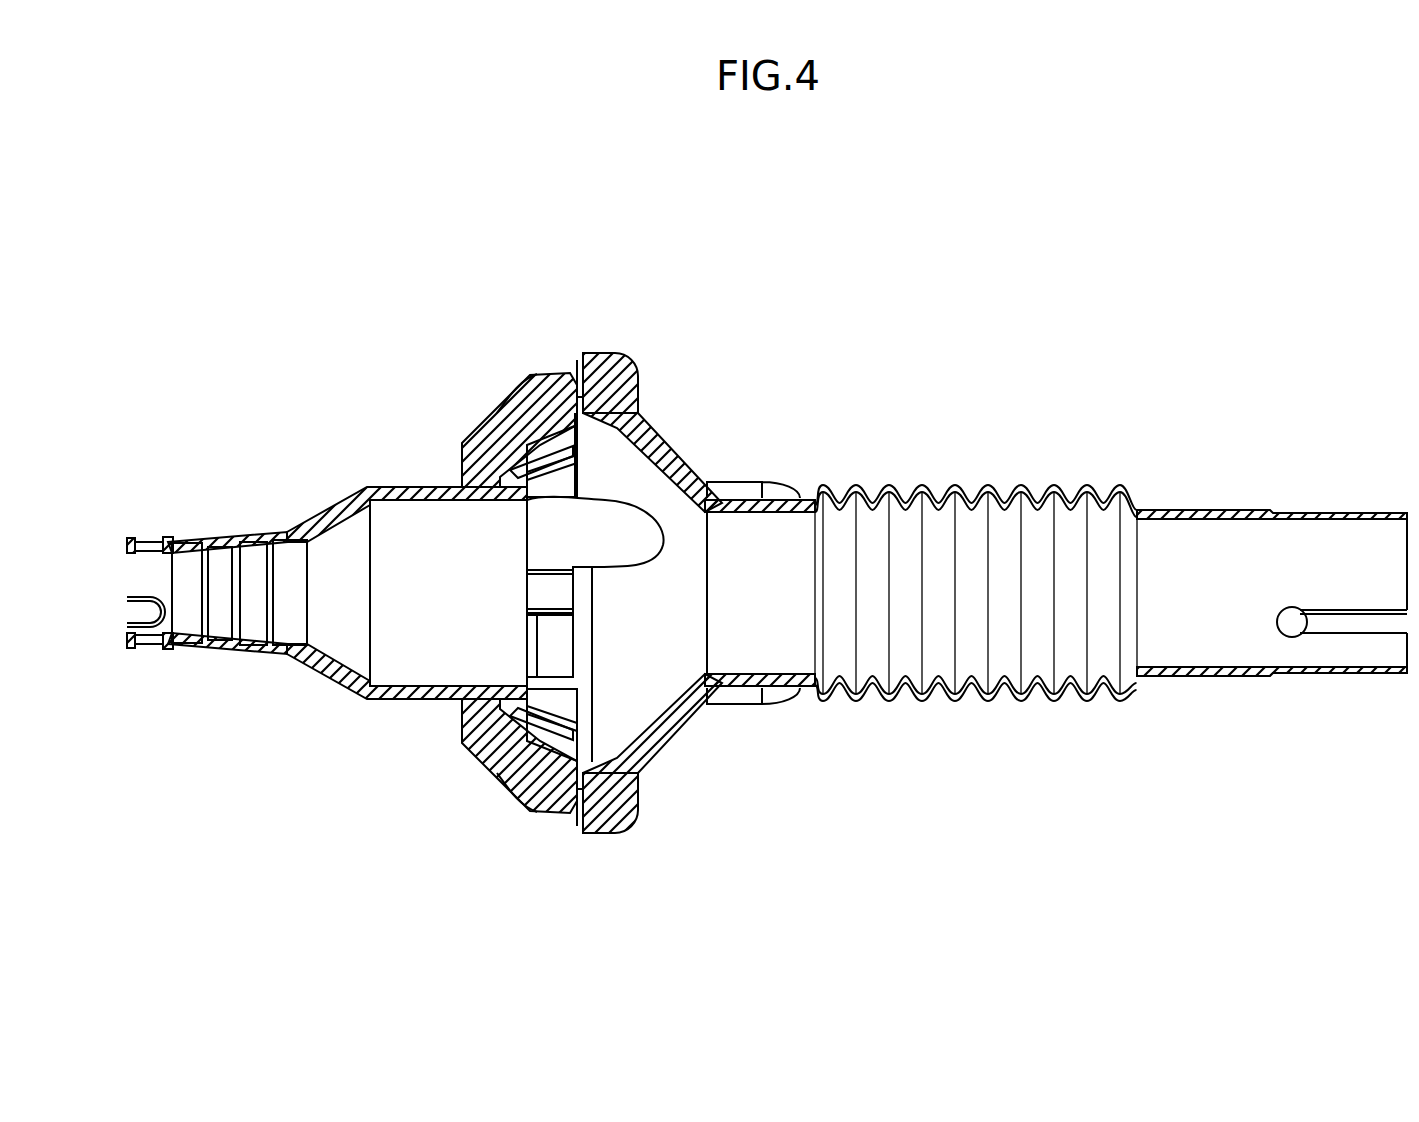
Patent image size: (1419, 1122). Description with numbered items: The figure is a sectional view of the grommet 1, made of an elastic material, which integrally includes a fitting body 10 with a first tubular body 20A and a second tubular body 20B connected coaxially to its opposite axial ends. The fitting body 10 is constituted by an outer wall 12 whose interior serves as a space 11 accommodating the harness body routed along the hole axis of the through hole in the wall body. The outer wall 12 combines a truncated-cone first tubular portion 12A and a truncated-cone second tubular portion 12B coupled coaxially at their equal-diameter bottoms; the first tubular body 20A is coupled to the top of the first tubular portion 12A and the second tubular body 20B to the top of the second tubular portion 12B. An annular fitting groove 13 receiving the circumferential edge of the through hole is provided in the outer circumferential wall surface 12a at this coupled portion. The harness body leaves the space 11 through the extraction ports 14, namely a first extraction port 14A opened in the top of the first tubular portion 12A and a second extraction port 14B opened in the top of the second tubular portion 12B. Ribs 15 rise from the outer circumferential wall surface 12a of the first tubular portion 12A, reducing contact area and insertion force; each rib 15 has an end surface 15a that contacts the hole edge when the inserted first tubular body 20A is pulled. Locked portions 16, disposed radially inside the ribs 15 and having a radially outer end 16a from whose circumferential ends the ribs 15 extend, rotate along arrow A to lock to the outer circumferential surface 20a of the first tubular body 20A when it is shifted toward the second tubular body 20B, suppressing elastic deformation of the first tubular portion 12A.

The grommet 1 is at (748, 168).
The fitting body 10 is at (480, 216).
The space 11 is at (653, 497).
The first tubular portion 12A is at (547, 353).
The second tubular portion 12B is at (665, 412).
The outer circumferential wall surface 12a is at (522, 805).
The outer wall 12 is at (622, 620).
The fitting groove 13 is at (580, 393).
The first extraction port 14A is at (473, 552).
The second extraction port 14B is at (703, 563).
The seal portion 14 is at (454, 533).
The end surface 15a is at (490, 856).
The rib 15 is at (521, 593).
The radially outer end 16a is at (433, 822).
The locked portion 16 is at (539, 593).
The first tubular body 20A is at (285, 497).
The outer circumferential surface 20a is at (403, 490).
The second tubular body 20B is at (992, 457).
The arrow A is at (447, 427).